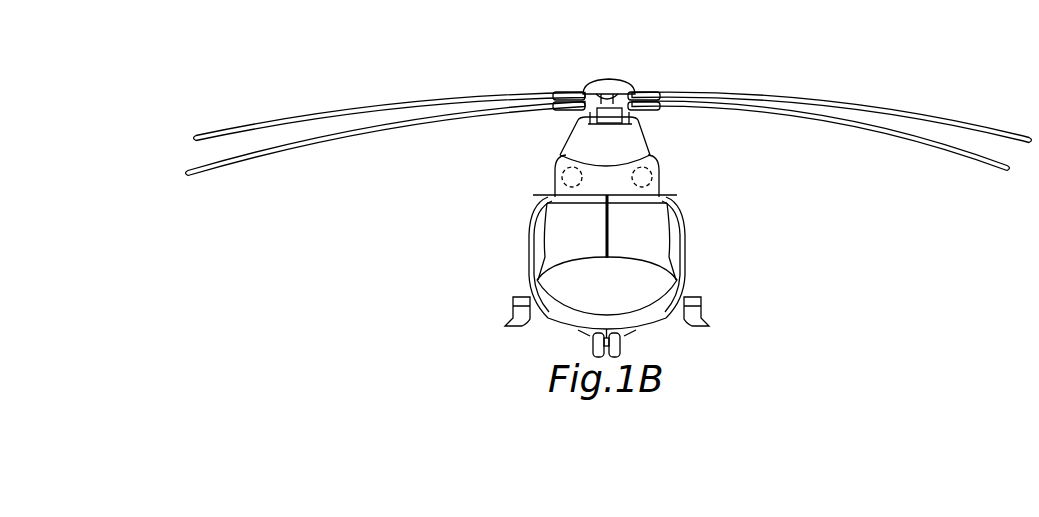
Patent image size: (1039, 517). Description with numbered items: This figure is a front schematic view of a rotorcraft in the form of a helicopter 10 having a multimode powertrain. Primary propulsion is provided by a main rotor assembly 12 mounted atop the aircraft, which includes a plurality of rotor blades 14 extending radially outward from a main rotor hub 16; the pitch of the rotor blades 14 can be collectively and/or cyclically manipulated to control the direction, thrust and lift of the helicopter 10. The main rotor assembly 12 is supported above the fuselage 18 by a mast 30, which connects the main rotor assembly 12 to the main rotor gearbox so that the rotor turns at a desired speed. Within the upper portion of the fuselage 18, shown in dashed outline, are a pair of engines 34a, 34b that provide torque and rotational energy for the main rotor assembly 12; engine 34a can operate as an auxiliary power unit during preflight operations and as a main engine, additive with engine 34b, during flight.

The helicopter 10 is at (609, 186).
The main rotor assembly 12 is at (840, 104).
The rotor blades 14 is at (915, 150).
The main rotor hub 16 is at (610, 88).
The fuselage 18 is at (655, 318).
The mast 30 is at (612, 118).
The engine 34a is at (686, 170).
The engine 34b is at (556, 176).